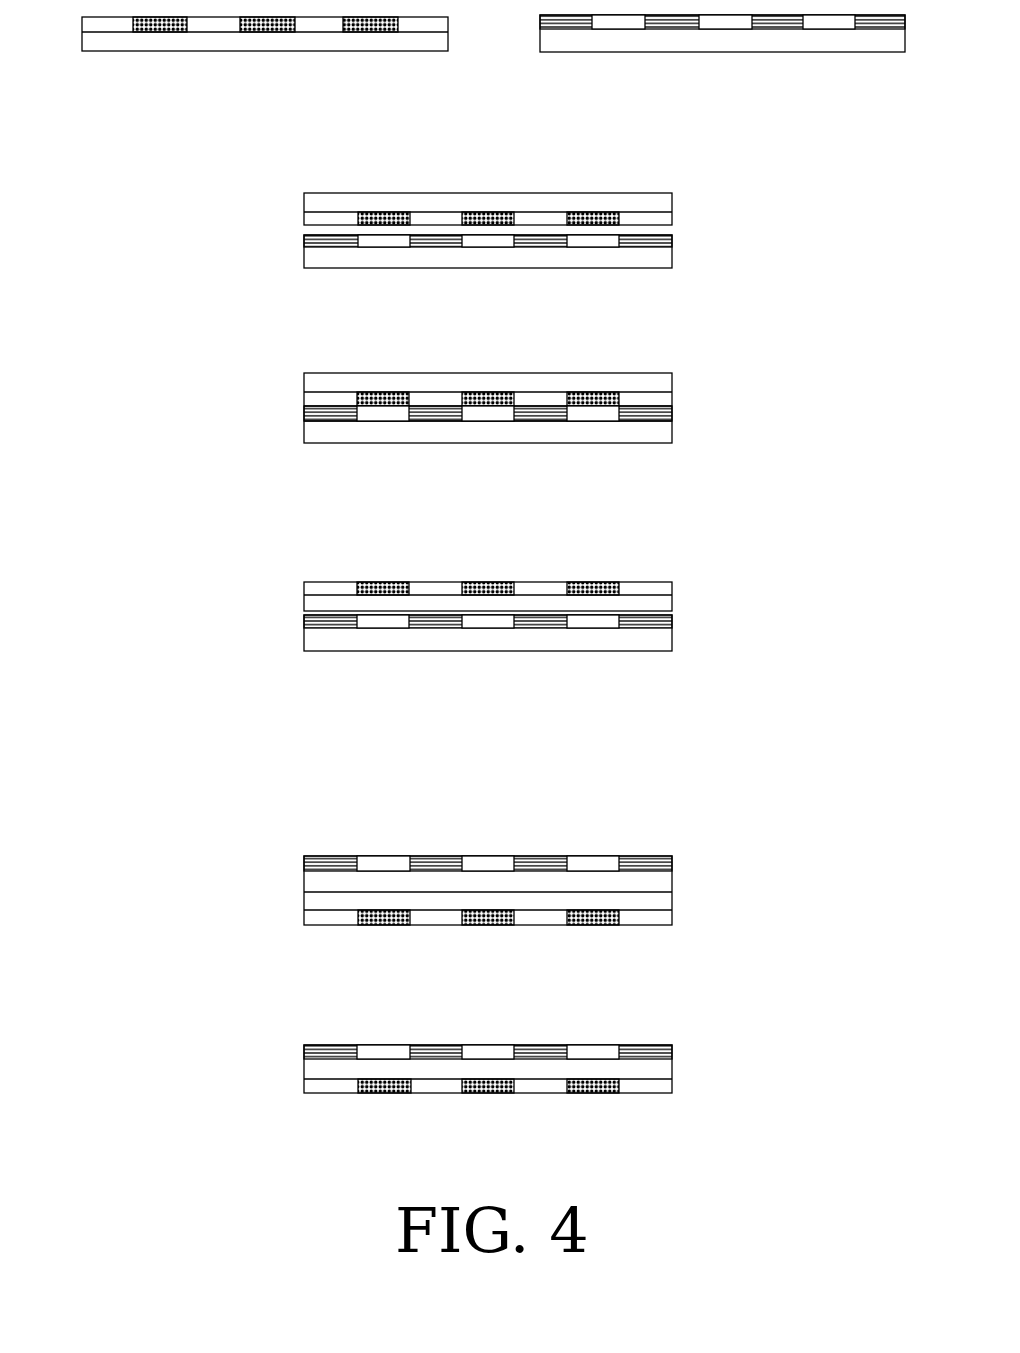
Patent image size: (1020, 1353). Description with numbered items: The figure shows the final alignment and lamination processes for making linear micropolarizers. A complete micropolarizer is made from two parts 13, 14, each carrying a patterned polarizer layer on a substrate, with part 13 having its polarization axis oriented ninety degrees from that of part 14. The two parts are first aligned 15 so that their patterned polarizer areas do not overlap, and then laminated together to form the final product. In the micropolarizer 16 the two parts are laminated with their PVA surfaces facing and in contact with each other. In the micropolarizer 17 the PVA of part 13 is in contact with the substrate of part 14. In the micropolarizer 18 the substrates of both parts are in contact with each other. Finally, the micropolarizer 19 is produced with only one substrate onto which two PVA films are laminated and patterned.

The part 13 is at (530, 33).
The part 14 is at (75, 42).
The alignment of the two parts 15 is at (293, 243).
The μPol 16 is at (287, 420).
The μPol 17 is at (293, 632).
The μPol 18 is at (294, 874).
The μPol 19 is at (293, 1063).